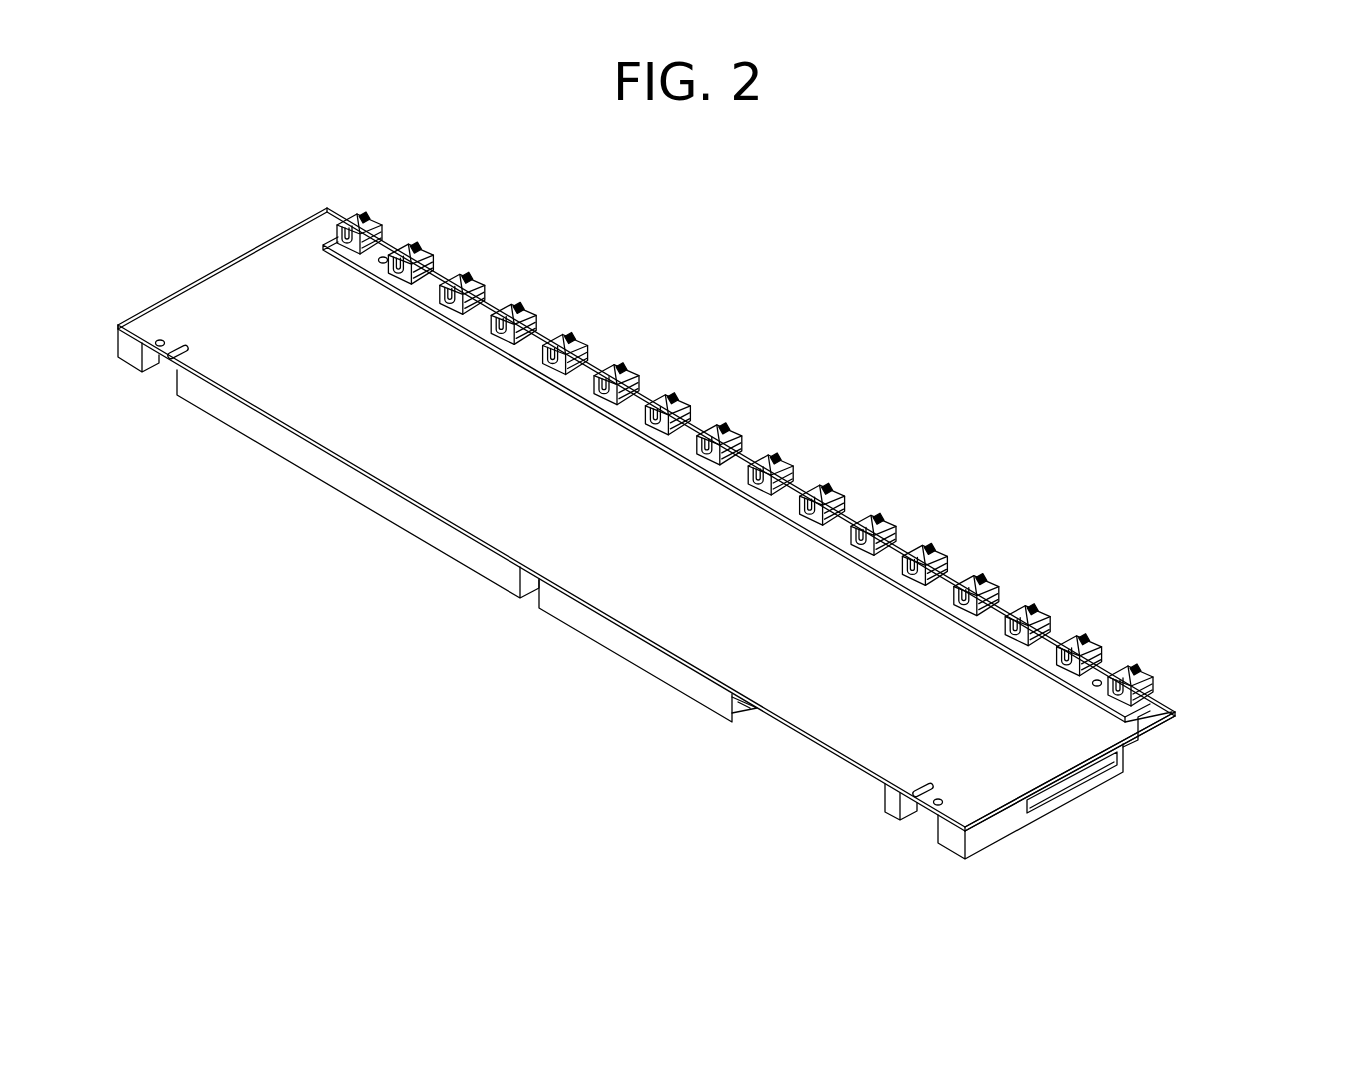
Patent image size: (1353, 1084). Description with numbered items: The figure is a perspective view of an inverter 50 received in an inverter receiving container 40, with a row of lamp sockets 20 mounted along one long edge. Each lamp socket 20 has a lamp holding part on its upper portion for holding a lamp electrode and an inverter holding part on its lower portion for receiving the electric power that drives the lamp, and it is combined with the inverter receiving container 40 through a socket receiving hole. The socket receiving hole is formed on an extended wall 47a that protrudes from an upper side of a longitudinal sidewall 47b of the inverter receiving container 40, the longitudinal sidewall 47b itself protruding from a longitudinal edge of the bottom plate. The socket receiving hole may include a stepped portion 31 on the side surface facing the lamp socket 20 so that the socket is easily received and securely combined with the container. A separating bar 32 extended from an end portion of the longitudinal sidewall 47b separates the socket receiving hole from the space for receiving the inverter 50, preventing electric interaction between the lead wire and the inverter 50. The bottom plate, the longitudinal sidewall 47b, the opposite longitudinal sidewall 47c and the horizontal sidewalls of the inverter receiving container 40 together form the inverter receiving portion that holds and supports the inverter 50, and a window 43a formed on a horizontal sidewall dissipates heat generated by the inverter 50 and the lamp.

The lamp socket 20 is at (1032, 616).
The stepped portion 31 is at (1048, 660).
The separating bar 32 is at (1102, 712).
The inverter receiving container 40 is at (978, 862).
The window 43a is at (1044, 793).
The extended wall 47a is at (1178, 713).
The longitudinal sidewall 47b is at (1137, 741).
The opposite longitudinal sidewall 47c is at (598, 632).
The inverter 50 is at (833, 722).